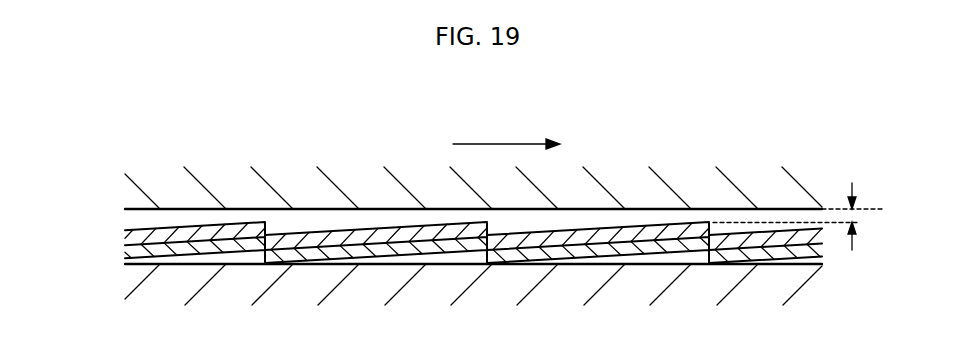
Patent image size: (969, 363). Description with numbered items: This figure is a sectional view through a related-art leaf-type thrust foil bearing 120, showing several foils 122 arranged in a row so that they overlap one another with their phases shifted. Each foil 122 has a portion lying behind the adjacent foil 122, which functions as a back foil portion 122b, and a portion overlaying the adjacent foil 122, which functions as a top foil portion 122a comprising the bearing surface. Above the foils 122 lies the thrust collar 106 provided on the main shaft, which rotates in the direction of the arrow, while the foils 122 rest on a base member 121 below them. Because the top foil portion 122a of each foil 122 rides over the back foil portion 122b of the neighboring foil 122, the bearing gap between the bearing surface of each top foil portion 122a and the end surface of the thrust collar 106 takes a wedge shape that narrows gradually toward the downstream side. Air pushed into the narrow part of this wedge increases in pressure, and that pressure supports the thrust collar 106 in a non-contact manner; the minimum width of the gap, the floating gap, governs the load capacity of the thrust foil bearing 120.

The thrust collar 106 is at (758, 188).
The thrust foil bearing 120 is at (436, 285).
The lower plate 121 is at (788, 278).
The foil 122 is at (473, 285).
The top foil portion 122a is at (333, 242).
The back foil portion 122b is at (382, 252).